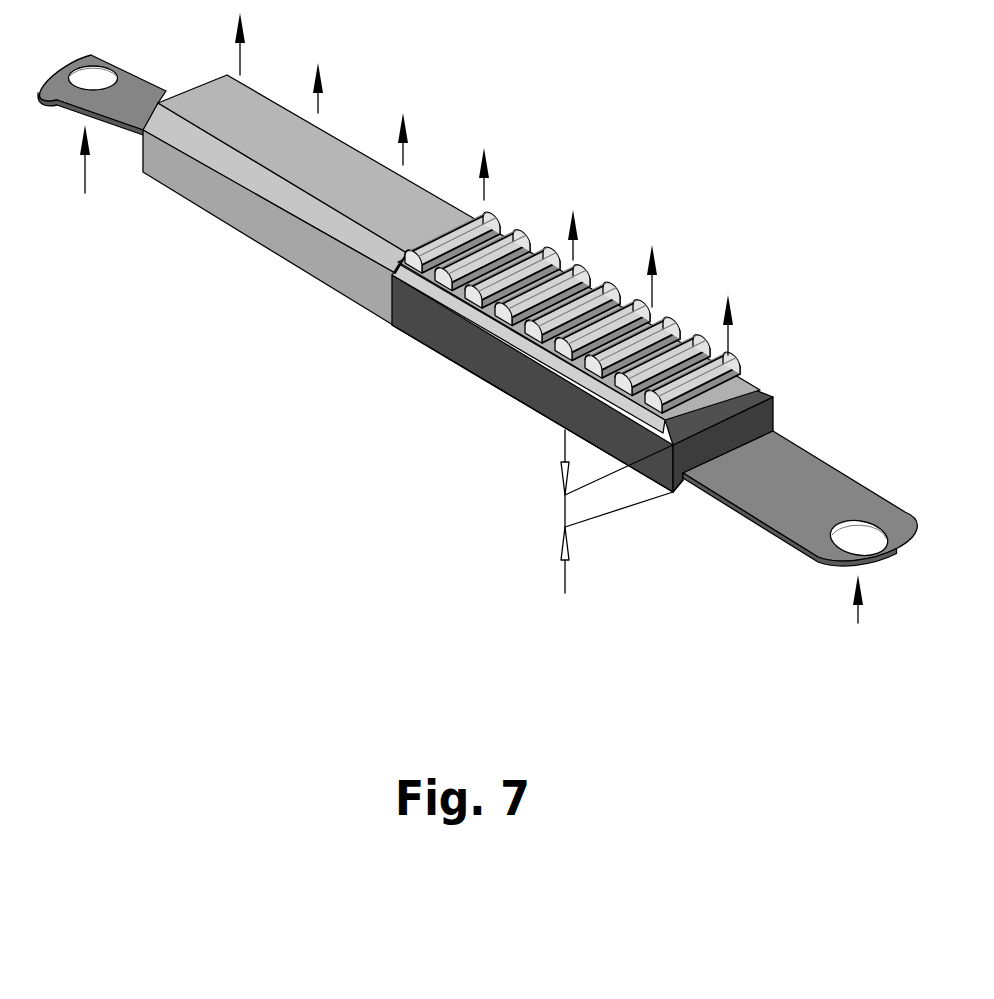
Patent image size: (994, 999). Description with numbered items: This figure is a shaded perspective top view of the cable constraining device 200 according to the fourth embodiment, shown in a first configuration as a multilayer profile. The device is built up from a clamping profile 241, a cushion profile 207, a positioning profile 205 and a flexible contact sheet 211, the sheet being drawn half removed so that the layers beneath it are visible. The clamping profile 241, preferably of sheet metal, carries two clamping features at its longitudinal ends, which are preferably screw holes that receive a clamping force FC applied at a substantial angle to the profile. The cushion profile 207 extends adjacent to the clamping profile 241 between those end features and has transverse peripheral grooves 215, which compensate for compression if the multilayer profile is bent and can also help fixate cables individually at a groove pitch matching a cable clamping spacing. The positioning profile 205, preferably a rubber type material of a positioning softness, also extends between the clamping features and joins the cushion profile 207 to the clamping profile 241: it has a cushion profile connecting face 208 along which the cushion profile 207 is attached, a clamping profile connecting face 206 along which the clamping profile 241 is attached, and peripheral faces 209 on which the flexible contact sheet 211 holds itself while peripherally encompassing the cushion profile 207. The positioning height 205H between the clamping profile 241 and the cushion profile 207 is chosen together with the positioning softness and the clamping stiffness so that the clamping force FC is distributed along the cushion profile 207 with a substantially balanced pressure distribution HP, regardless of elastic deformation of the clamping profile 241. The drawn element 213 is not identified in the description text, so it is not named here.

The cable constraining device 200 is at (477, 328).
The positioning profile 205 is at (672, 493).
The positioning height 205H is at (605, 511).
The clamping profile connecting face 206 is at (760, 437).
The cushion profile 207 is at (710, 390).
The cushion profile connecting face 208 is at (723, 413).
The peripheral faces 209 is at (530, 392).
The flexible contact sheet 211 is at (318, 265).
The housing lid 213 is at (318, 177).
The transverse peripheral grooves 215 is at (560, 357).
The clamping profile 241 is at (765, 482).